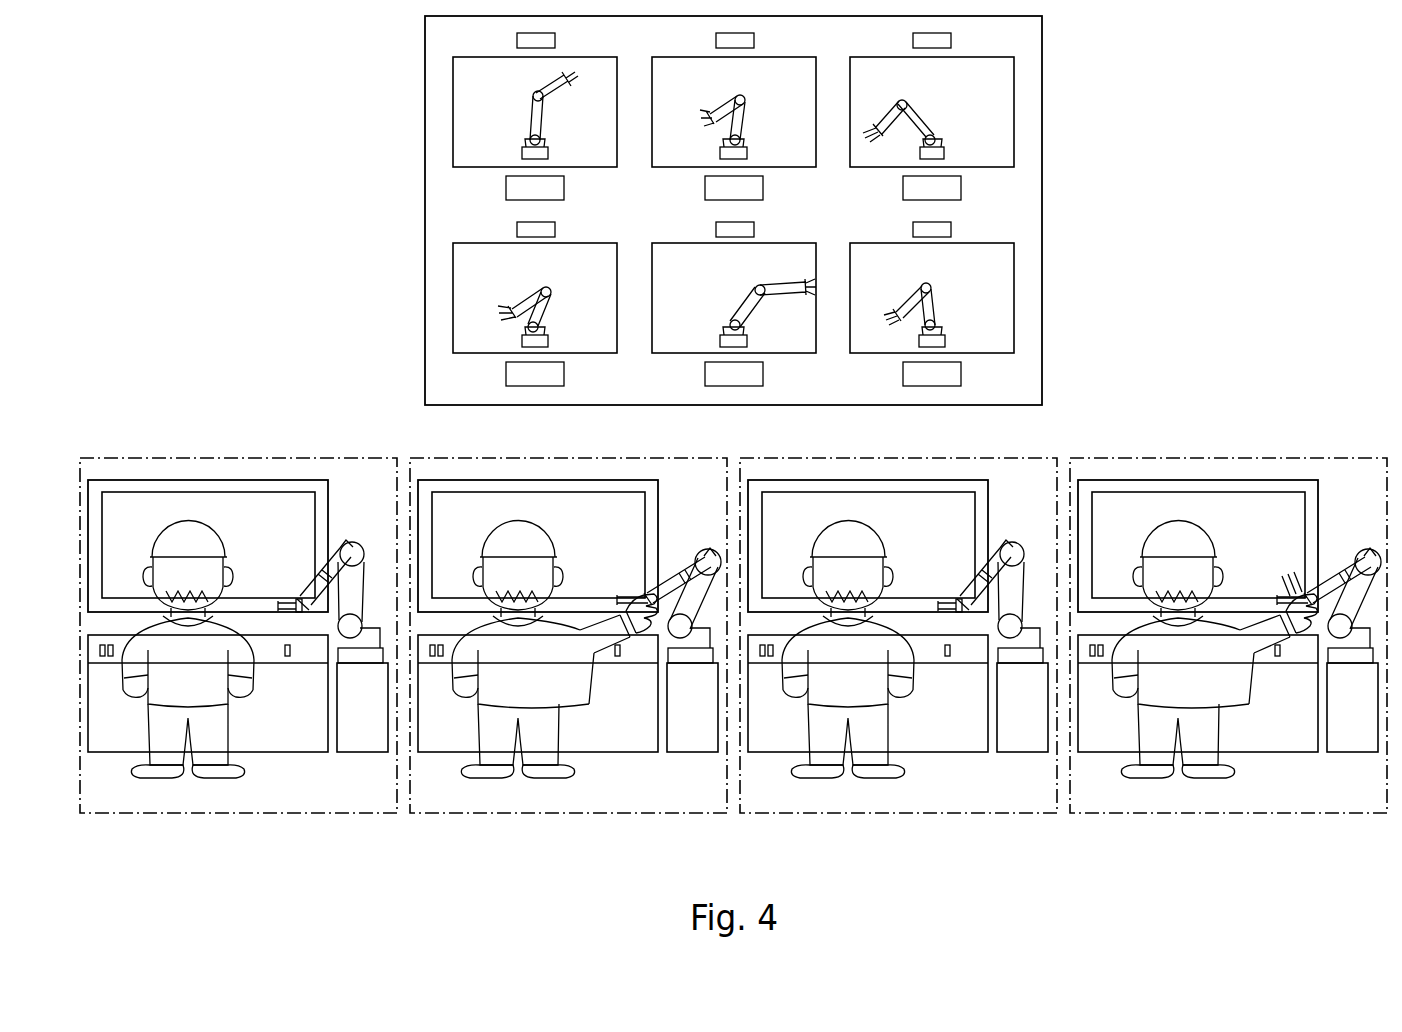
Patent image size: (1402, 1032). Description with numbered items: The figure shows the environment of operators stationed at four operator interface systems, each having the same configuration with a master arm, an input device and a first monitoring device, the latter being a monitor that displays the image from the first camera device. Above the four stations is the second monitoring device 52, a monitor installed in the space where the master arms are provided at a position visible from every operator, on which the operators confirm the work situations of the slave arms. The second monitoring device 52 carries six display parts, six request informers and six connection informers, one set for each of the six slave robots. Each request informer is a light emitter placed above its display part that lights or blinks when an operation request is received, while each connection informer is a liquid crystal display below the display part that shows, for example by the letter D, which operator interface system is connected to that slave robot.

The second monitoring device 52 is at (1043, 101).